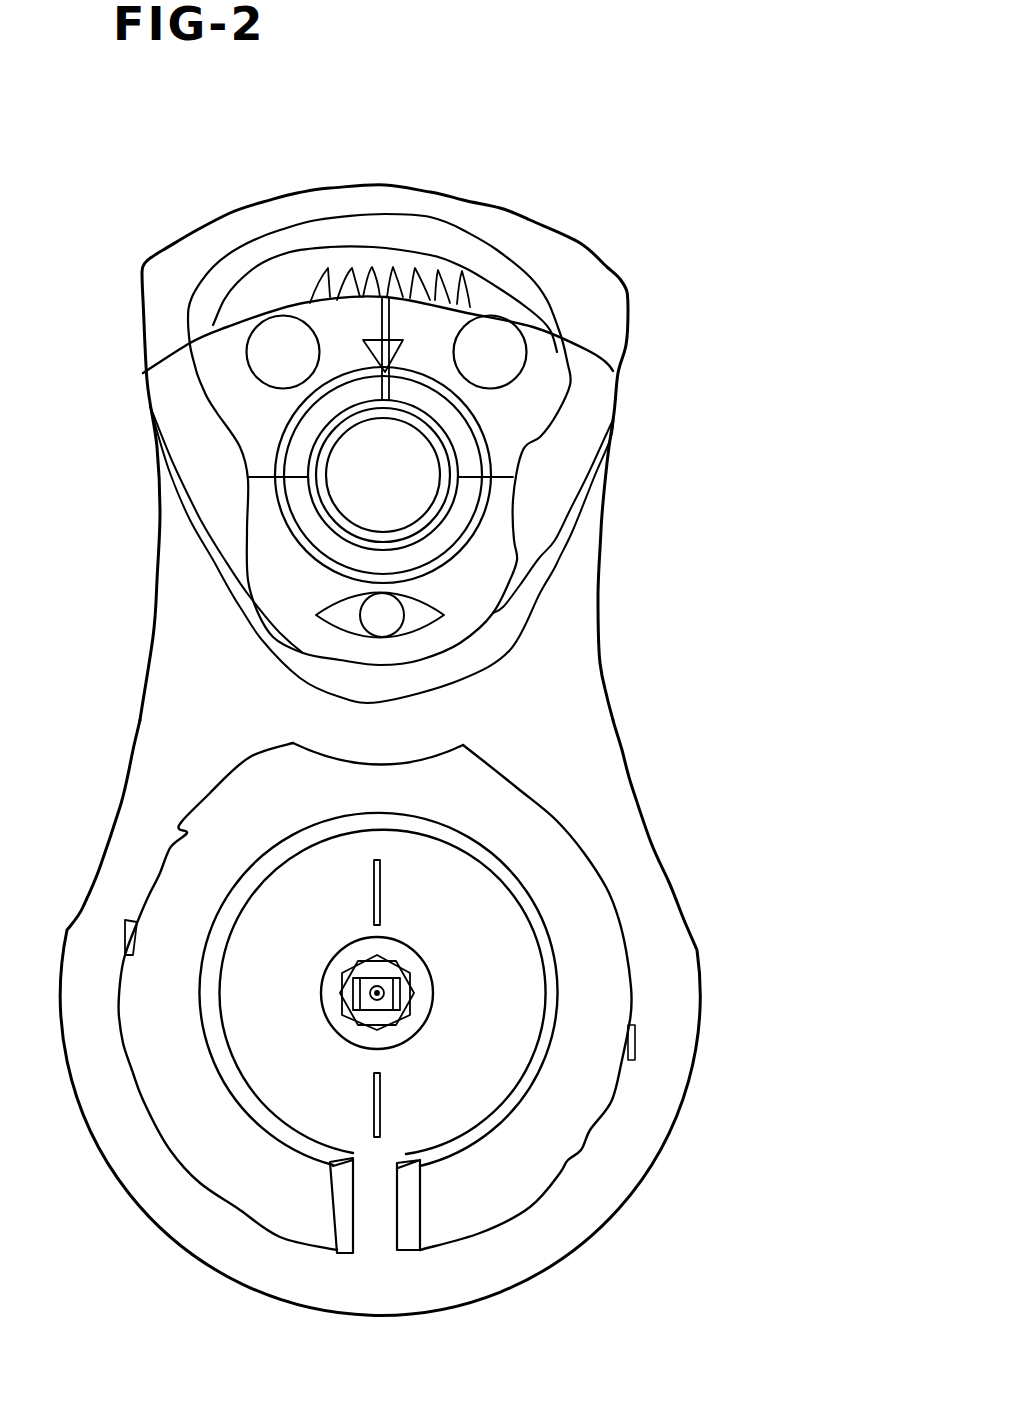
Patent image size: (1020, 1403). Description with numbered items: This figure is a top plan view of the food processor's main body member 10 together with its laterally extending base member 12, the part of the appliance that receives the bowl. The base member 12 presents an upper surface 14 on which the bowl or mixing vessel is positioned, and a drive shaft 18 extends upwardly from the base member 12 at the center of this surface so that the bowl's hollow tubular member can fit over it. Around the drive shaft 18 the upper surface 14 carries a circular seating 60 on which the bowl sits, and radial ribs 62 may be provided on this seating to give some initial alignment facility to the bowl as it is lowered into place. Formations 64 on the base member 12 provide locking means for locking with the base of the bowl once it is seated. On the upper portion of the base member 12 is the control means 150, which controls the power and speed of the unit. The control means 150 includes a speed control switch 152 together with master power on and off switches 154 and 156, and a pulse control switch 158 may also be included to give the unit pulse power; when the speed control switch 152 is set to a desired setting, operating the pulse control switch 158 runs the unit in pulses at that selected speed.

The main body member 10 is at (633, 319).
The base member 12 is at (600, 1229).
The upper surface 14 is at (610, 981).
The drive shaft 18 is at (352, 996).
The circular seating 60 is at (527, 900).
The radial ribs 62 is at (371, 894).
The formations 64 is at (150, 892).
The control means 150 is at (180, 416).
The speed control switch 152 is at (427, 471).
The master power on and off switch 154 is at (204, 357).
The master power on and off switch 156 is at (565, 350).
The pulse control switch 158 is at (477, 600).